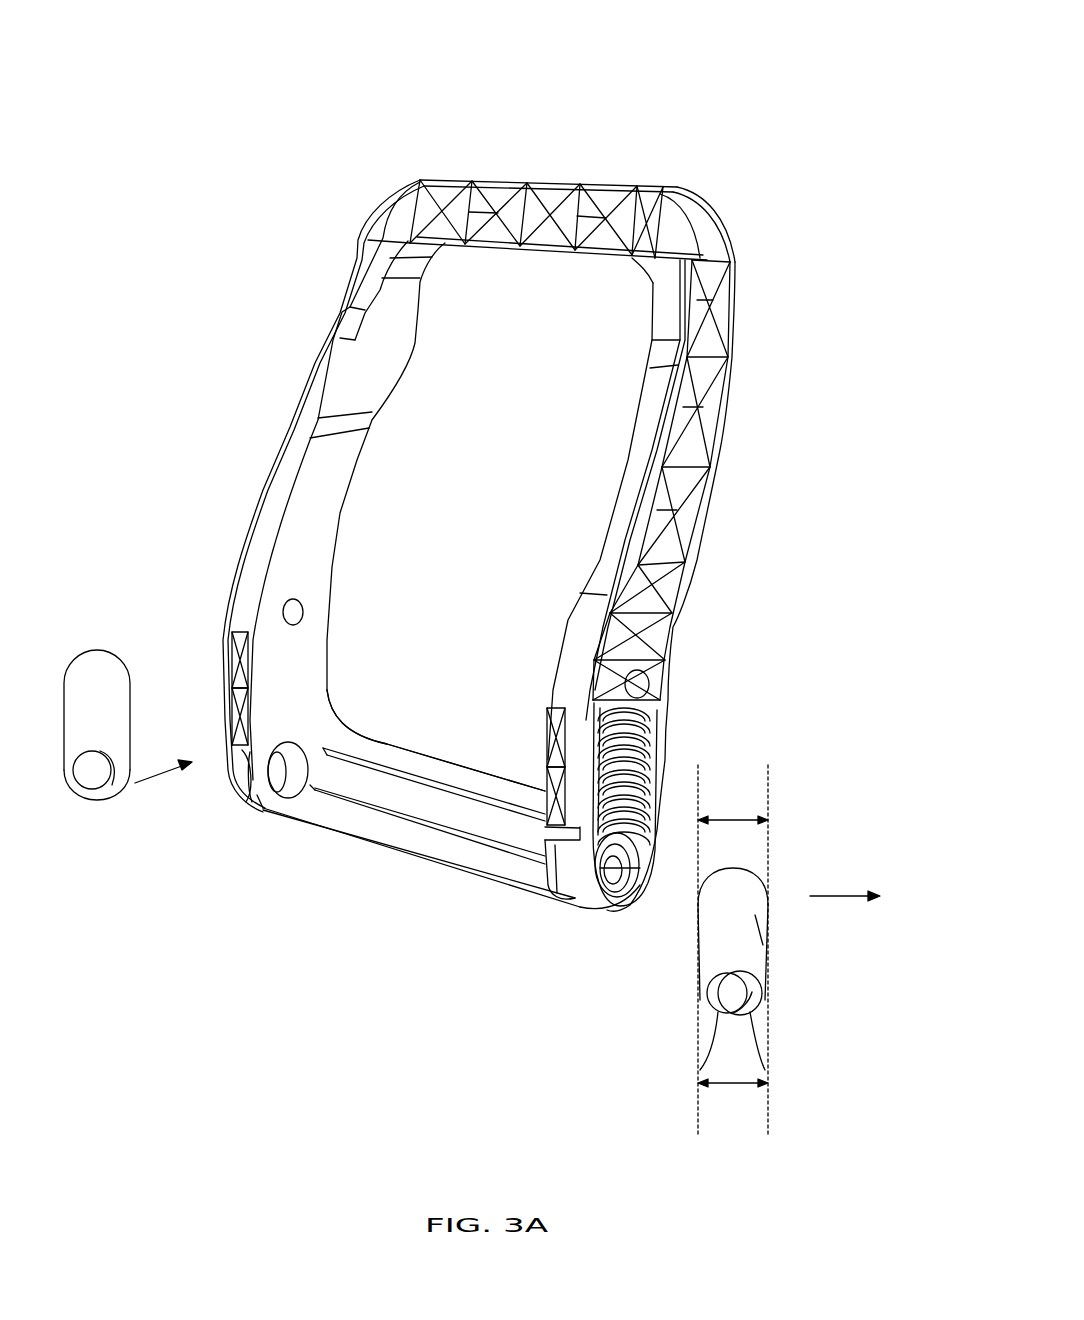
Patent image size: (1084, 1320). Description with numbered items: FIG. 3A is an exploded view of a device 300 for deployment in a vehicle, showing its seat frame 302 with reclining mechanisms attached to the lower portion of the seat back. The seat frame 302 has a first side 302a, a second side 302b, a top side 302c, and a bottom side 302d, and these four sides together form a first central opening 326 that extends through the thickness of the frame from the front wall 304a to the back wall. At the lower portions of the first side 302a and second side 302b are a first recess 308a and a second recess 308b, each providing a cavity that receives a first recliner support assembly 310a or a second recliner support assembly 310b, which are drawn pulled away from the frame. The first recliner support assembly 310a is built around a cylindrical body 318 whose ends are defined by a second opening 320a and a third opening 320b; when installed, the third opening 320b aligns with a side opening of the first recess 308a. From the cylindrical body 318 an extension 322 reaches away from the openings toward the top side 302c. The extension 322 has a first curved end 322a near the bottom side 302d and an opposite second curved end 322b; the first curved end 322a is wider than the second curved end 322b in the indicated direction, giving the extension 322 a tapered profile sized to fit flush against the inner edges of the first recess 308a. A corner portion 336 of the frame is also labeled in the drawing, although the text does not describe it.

The device 300 is at (438, 48).
The seat frame 302 is at (497, 106).
The first side 302a is at (735, 392).
The second side 302b is at (318, 362).
The top side 302c is at (575, 180).
The bottom side 302d is at (437, 868).
The front wall 304a is at (635, 485).
The first recess 308a is at (665, 768).
The second recess 308b is at (240, 712).
The first recliner support assembly 310a is at (855, 1118).
The second recliner support assembly 310b is at (120, 822).
The cylindrical body 318 is at (762, 1015).
The second opening 320a is at (760, 990).
The third opening 320b is at (762, 1060).
The extension 322 is at (768, 925).
The first curved end 322a is at (720, 1055).
The second curved end 322b is at (745, 870).
The first central opening 326 is at (504, 546).
The corner portion 336 is at (680, 240).